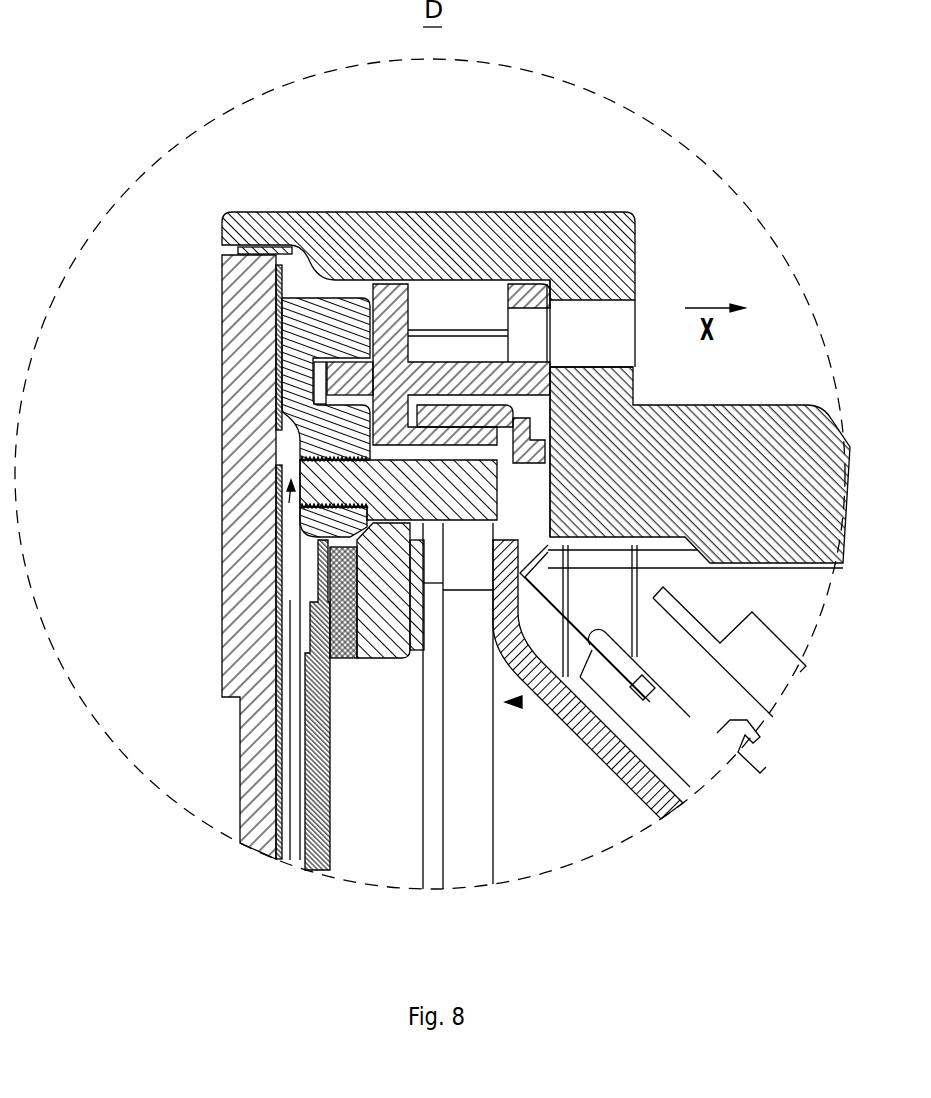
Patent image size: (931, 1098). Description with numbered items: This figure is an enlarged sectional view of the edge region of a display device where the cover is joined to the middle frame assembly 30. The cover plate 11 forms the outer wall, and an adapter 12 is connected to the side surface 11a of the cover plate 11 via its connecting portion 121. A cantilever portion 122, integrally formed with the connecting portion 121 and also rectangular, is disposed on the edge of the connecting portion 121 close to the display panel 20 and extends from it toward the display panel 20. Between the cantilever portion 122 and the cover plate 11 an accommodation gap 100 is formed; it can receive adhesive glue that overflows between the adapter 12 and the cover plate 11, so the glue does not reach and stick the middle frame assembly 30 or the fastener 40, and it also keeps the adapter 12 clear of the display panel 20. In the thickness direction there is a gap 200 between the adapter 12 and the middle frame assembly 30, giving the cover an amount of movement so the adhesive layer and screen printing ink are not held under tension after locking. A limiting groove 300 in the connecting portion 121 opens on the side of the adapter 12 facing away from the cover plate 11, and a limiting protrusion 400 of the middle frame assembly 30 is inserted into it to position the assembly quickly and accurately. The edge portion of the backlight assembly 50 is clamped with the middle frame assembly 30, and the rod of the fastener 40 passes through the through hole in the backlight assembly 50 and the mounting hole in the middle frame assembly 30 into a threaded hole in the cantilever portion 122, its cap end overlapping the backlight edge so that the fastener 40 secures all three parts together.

The cover plate 11 is at (247, 276).
The side surface 11a is at (268, 218).
The adapter 12 is at (235, 340).
The connecting portion 121 is at (330, 345).
The cantilever portion 122 is at (312, 451).
The display panel 20 is at (280, 543).
The middle frame assembly 30 is at (410, 370).
The fastener 40 is at (450, 485).
The backlight assembly 50 is at (522, 702).
The accommodation gap 100 is at (280, 510).
The gap 200 is at (352, 372).
The limiting groove 300 is at (312, 292).
The limiting protrusion 400 is at (317, 360).